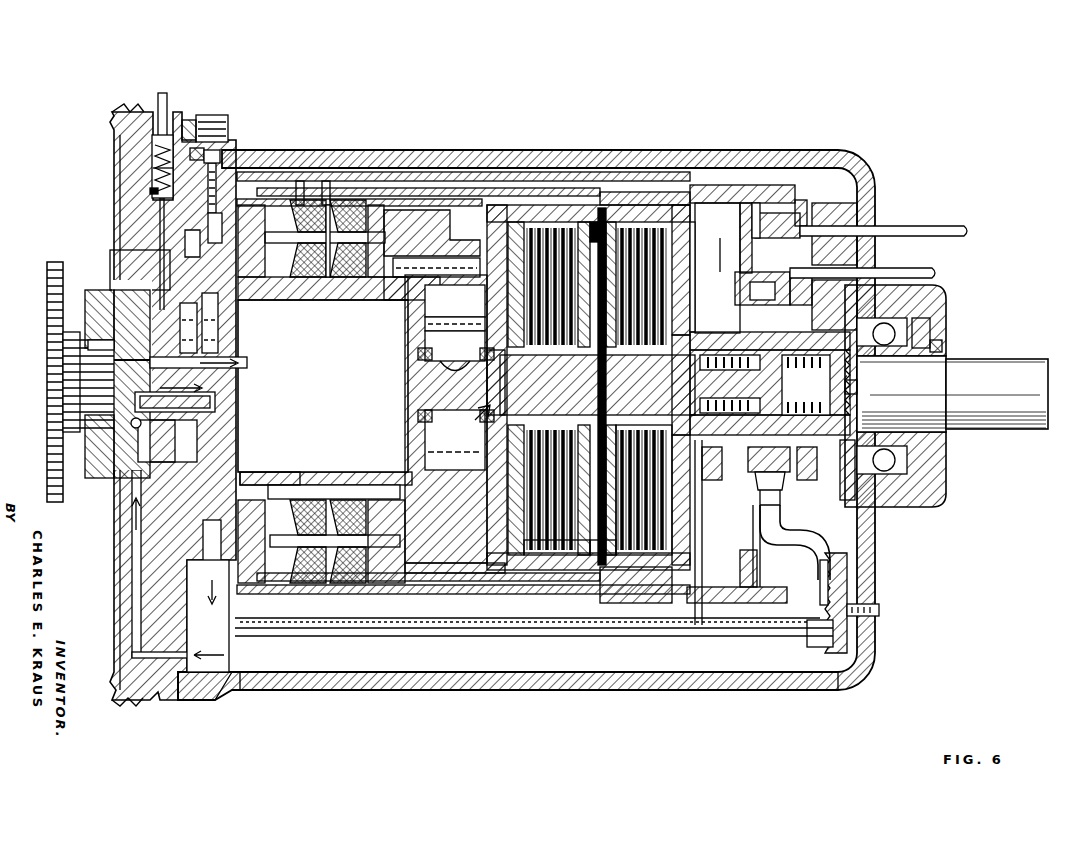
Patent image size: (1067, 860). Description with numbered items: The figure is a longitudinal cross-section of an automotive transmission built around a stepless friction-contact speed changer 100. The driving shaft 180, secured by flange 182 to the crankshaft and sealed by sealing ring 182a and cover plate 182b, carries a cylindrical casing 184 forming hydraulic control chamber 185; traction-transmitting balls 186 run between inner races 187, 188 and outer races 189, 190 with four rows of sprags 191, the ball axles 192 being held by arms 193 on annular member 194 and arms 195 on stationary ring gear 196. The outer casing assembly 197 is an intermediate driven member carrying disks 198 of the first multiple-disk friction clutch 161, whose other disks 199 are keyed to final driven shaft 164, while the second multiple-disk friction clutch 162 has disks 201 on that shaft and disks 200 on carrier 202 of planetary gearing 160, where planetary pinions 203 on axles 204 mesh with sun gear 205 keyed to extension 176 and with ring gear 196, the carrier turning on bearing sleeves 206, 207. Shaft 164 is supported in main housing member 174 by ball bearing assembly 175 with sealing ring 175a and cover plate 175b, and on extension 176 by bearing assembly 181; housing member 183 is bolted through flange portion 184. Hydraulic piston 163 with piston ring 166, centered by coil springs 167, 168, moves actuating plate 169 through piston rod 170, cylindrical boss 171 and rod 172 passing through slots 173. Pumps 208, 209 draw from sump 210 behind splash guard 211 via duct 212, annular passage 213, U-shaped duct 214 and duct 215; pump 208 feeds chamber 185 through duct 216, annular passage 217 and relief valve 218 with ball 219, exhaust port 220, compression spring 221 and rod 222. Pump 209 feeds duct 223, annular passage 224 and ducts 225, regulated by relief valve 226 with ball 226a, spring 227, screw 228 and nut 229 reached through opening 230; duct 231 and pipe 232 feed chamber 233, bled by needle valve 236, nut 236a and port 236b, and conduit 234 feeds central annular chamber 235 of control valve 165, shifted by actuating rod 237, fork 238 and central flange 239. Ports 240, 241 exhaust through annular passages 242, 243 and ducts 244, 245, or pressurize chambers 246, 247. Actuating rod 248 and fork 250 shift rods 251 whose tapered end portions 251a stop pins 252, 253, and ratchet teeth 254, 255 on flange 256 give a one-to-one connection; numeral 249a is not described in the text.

The speed changer 100 is at (326, 181).
The planetary gearing 160 is at (466, 232).
The first multiple-disk friction clutch 161 is at (636, 228).
The second multiple-disk friction clutch 162 is at (548, 220).
The hydraulic piston 163 is at (782, 393).
The final driven shaft 164 is at (952, 394).
The control valve 165 is at (684, 300).
The piston ring 166 is at (770, 335).
The coil spring 167 is at (700, 408).
The coil spring 168 is at (850, 395).
The actuating plate 169 is at (598, 228).
The piston rod 170 is at (700, 372).
The cylindrical boss 171 is at (632, 460).
The rod 172 is at (602, 570).
The slots 173 is at (585, 387).
The main housing member 174 is at (748, 150).
The ball bearing assembly 175 is at (898, 507).
The flexible sealing ring 175a is at (947, 340).
The cover plate 175b is at (946, 300).
The extension of driving shaft 176 is at (456, 440).
The driving shaft 180 is at (107, 379).
The bearing assembly 181 is at (530, 365).
The flange 182 is at (55, 502).
The flexible sealing ring 182a is at (63, 410).
The cover plate 182b is at (100, 478).
The housing member 183 is at (150, 582).
The flange portion 184 is at (118, 668).
The hydraulic control chamber 185 is at (323, 386).
The traction-transmitting balls 186 is at (300, 472).
The inner race 187 is at (312, 300).
The inner race 188 is at (344, 300).
The outer race 189 is at (316, 583).
The outer race 190 is at (346, 583).
The sprags 191 is at (275, 485).
The ball axles 192 is at (340, 270).
The arms 193 is at (280, 304).
The annular member 194 is at (294, 300).
The arms 195 is at (380, 300).
The ring gear 196 is at (430, 210).
The outer casing assembly 197 is at (518, 168).
The disks 198 is at (680, 212).
The disks 199 is at (680, 270).
The disks 200 is at (545, 570).
The disks 201 is at (596, 570).
The carrier 202 is at (480, 590).
The planetary pinions 203 is at (455, 319).
The axles 204 is at (455, 301).
The sun gear 205 is at (455, 351).
The bearing sleeve 206 is at (418, 356).
The bearing sleeve 207 is at (440, 375).
The pump 208 is at (88, 300).
The pump 209 is at (88, 344).
The sump 210 is at (420, 676).
The perforated splash guard 211 is at (722, 632).
The duct 212 is at (122, 598).
The annular passage 213 is at (136, 430).
The U-shaped duct 214 is at (215, 400).
The duct 215 is at (203, 530).
The duct 216 is at (247, 363).
The annular passage 217 is at (114, 366).
The adjustable relief valve 218 is at (150, 190).
The spring-biased ball 219 is at (185, 236).
The exhaust port 220 is at (173, 150).
The compression spring 221 is at (153, 168).
The longitudinally movable rod 222 is at (158, 100).
The duct 223 is at (180, 312).
The annular passage 224 is at (208, 236).
The ducts 225 is at (300, 181).
The adjustable relief valve 226 is at (204, 156).
The ball 226a is at (208, 215).
The spring 227 is at (208, 200).
The screw 228 is at (204, 155).
The nut 229 is at (208, 124).
The opening 230 is at (225, 118).
The duct 231 is at (133, 560).
The pipe 232 is at (240, 672).
The chamber 233 is at (833, 640).
The conduit 234 is at (812, 530).
The central annular chamber 235 is at (769, 476).
The needle valve 236 is at (847, 625).
The nut 236a is at (870, 606).
The port 236b is at (825, 605).
The actuating rod 237 is at (905, 270).
The fork 238 is at (788, 298).
The central flange 239 is at (762, 288).
The port 240 is at (702, 480).
The port 241 is at (824, 500).
The annular passage 242 is at (712, 480).
The annular passage 243 is at (848, 440).
The duct 244 is at (740, 560).
The duct 245 is at (808, 480).
The chamber 246 is at (700, 362).
The chamber 247 is at (830, 418).
The actuating rod 248 is at (900, 228).
The block 249a is at (780, 185).
The fork 250 is at (807, 210).
The rod 251 is at (695, 185).
The extreme end portion 251a is at (400, 188).
The pin 252 is at (334, 172).
The pin 253 is at (364, 188).
The ratchet teeth 254 is at (755, 228).
The ratchet teeth 255 is at (752, 222).
The flange 256 is at (692, 288).